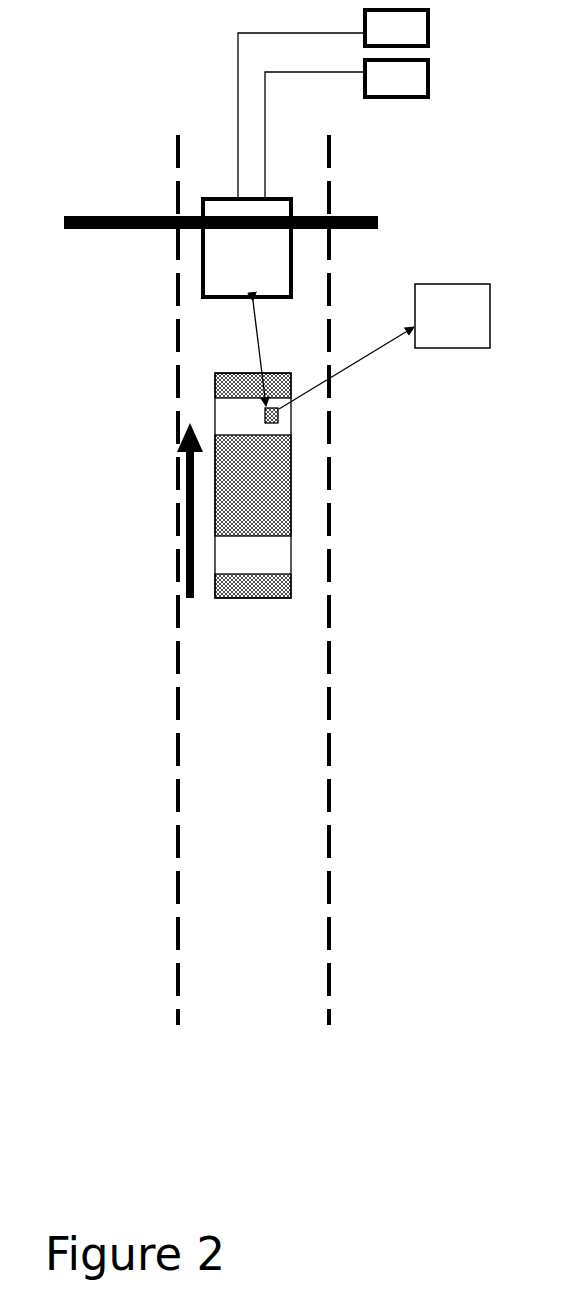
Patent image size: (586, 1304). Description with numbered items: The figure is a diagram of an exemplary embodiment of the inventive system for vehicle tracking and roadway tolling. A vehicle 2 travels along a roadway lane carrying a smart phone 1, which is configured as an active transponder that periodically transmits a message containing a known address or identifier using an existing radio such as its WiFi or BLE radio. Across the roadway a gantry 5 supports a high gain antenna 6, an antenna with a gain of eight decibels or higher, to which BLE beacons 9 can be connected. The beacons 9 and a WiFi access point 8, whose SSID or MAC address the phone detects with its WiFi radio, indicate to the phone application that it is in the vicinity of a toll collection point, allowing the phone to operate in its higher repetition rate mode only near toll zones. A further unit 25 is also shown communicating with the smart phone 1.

The smart phone 1 is at (283, 410).
The vehicle 2 is at (230, 598).
The gantry 5 is at (355, 229).
The high gain antennas 6 is at (216, 197).
The WiFi AP 8 is at (430, 34).
The BLE beacons 9 is at (405, 99).
The external unit / satellite receiver 25 is at (467, 348).